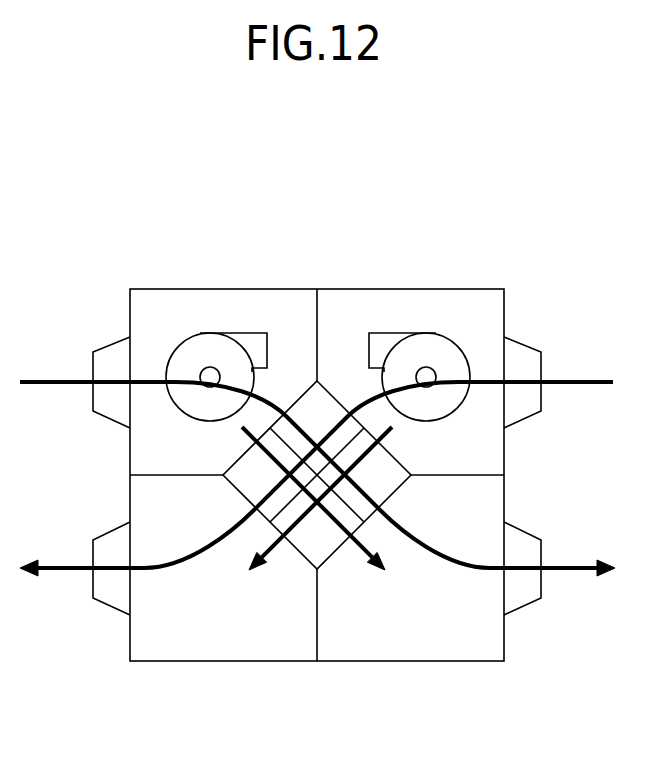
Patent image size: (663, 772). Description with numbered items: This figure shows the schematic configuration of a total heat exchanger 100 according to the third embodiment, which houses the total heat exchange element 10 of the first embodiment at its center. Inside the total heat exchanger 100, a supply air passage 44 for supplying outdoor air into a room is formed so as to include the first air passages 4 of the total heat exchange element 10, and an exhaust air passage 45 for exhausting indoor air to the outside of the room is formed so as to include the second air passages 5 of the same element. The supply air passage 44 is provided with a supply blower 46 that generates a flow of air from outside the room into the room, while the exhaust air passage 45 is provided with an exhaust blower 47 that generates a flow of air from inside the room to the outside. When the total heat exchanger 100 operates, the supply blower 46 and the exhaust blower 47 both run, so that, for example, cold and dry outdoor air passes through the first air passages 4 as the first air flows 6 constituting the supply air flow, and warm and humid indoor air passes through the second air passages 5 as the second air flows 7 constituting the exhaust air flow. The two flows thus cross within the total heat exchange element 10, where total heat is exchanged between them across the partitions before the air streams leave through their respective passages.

The total heat exchanger 100 is at (460, 184).
The total heat exchange element 10 is at (325, 408).
The supply blower 46 is at (214, 345).
The exhaust blower 47 is at (428, 345).
The supply air passage 44 is at (324, 479).
The first air passages 4 is at (570, 567).
The exhaust air passage 45 is at (316, 479).
The second air passages 5 is at (67, 567).
The first air flows 6 is at (359, 556).
The second air flows 7 is at (275, 556).